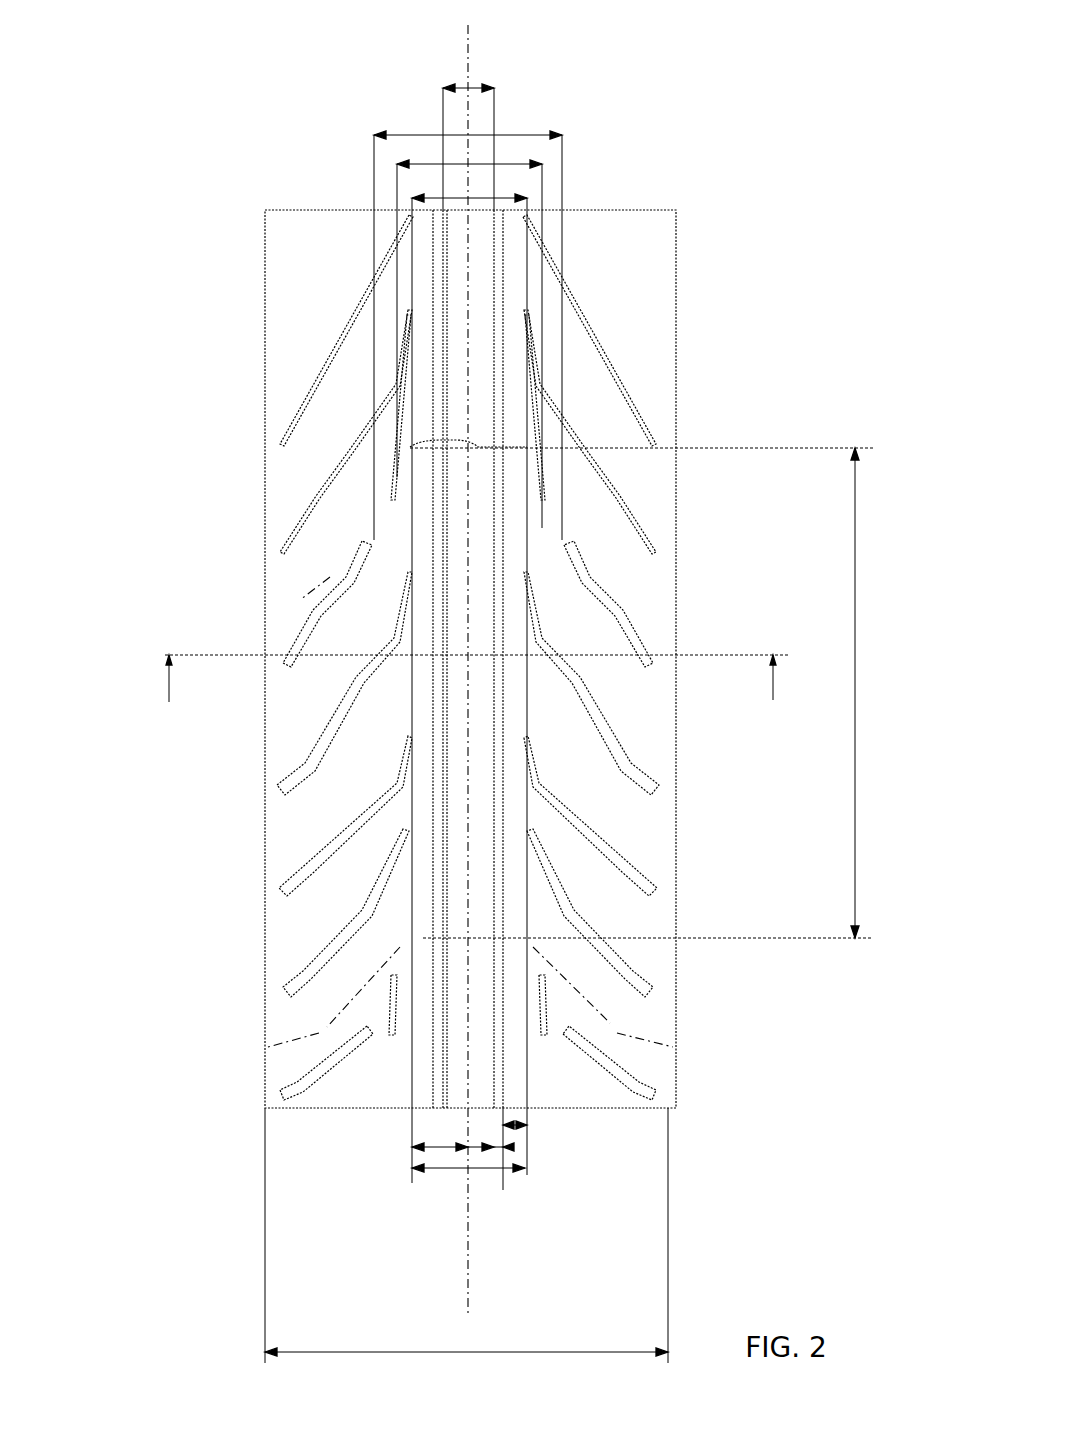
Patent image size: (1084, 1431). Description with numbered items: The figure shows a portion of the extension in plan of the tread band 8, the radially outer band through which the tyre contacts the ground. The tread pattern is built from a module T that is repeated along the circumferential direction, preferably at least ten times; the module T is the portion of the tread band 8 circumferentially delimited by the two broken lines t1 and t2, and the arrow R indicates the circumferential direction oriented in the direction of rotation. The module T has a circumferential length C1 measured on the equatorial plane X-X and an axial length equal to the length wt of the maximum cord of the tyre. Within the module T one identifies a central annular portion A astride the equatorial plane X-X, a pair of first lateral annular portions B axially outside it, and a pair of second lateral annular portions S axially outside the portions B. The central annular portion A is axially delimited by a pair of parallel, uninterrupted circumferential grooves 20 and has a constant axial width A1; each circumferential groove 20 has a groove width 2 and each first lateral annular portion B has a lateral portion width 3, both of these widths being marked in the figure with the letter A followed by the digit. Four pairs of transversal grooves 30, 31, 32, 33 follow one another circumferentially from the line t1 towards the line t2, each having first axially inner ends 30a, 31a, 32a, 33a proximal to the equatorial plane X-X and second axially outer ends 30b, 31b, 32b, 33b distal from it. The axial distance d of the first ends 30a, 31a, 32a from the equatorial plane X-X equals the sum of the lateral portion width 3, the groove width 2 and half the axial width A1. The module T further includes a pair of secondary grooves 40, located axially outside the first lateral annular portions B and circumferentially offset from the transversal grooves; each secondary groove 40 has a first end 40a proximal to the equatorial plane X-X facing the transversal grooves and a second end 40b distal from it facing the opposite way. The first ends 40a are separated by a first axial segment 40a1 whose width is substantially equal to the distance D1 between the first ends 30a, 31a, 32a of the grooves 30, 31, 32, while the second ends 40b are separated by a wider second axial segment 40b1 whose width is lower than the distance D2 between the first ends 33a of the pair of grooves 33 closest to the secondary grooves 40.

The circumferential groove width 2 is at (505, 1133).
The first lateral annular portion width 3 is at (500, 1150).
The tread band 8 is at (600, 193).
The circumferential grooves 20 is at (435, 797).
The transversal groove 30 is at (605, 948).
The first axially inner end 30a is at (407, 835).
The second axially outer end 30b is at (285, 990).
The transversal groove 31 is at (618, 852).
The first axially inner end 31a is at (410, 737).
The second axially outer end 31b is at (281, 893).
The transversal groove 32 is at (608, 722).
The first axially inner end 32a is at (407, 577).
The second axially outer end 32b is at (277, 793).
The transversal groove 33 is at (622, 600).
The first axially inner end 33a is at (370, 540).
The second axially outer end 33b is at (281, 672).
The secondary grooves 40 is at (548, 512).
The first end of secondary groove 40a is at (412, 530).
The second end of secondary groove 40b is at (395, 470).
The first axial segment 40a1 is at (437, 197).
The second axial segment 40b1 is at (432, 163).
The central annular portion A is at (636, 288).
The axial width of central annular portion A1 is at (458, 87).
The first lateral annular portions B is at (423, 500).
The circumferential length of module C1 is at (876, 693).
The distance between first ends D1 is at (488, 1170).
The distance between first ends of grooves 33 D2 is at (430, 135).
The arrow of circumferential direction R is at (133, 218).
The second lateral annular portions S is at (333, 275).
The module T is at (537, 555).
The equatorial plane X is at (468, 52).
The axial distance of first ends d is at (437, 1148).
The broken line t1 is at (625, 1032).
The broken line t2 is at (567, 490).
The length of maximum cord wt is at (357, 1352).